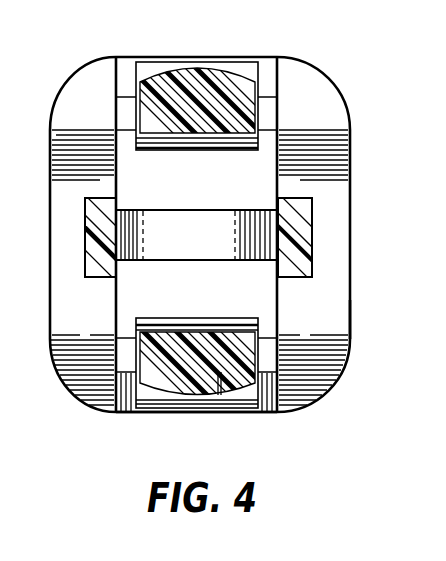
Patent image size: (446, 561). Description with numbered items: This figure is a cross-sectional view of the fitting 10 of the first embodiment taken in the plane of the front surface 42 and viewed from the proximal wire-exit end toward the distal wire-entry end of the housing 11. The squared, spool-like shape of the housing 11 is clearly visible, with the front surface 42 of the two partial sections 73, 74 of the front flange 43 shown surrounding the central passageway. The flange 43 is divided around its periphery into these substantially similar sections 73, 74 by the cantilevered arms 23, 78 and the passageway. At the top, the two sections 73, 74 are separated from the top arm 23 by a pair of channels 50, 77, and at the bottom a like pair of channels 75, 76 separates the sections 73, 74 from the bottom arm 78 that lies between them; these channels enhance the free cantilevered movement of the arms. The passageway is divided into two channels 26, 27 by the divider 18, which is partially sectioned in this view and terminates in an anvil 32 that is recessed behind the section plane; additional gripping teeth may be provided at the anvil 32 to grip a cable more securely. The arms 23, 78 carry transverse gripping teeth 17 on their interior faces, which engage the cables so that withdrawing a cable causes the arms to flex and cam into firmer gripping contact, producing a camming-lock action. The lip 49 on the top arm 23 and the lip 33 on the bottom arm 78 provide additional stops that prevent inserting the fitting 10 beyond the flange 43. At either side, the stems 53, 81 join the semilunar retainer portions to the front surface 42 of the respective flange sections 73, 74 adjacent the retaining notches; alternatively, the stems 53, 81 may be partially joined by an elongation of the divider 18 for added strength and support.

The fitting 10 is at (68, 46).
The housing 11 is at (72, 388).
The gripping teeth 17 is at (251, 298).
The divider 18 is at (203, 246).
The arm 23 is at (229, 66).
The channel 26 is at (171, 184).
The channel 27 is at (165, 304).
The anvil 32 is at (220, 210).
The lip 33 is at (180, 414).
The front surface 42 is at (307, 368).
The front flange 43 is at (343, 367).
The lip 49 is at (173, 70).
The channel 50 is at (267, 73).
The stem 53 is at (295, 234).
The flange section 73 is at (318, 108).
The flange section 74 is at (92, 100).
The channel 75 is at (272, 413).
The channel 76 is at (128, 413).
The channel 77 is at (127, 72).
The arm 78 is at (226, 413).
The stem 81 is at (97, 222).